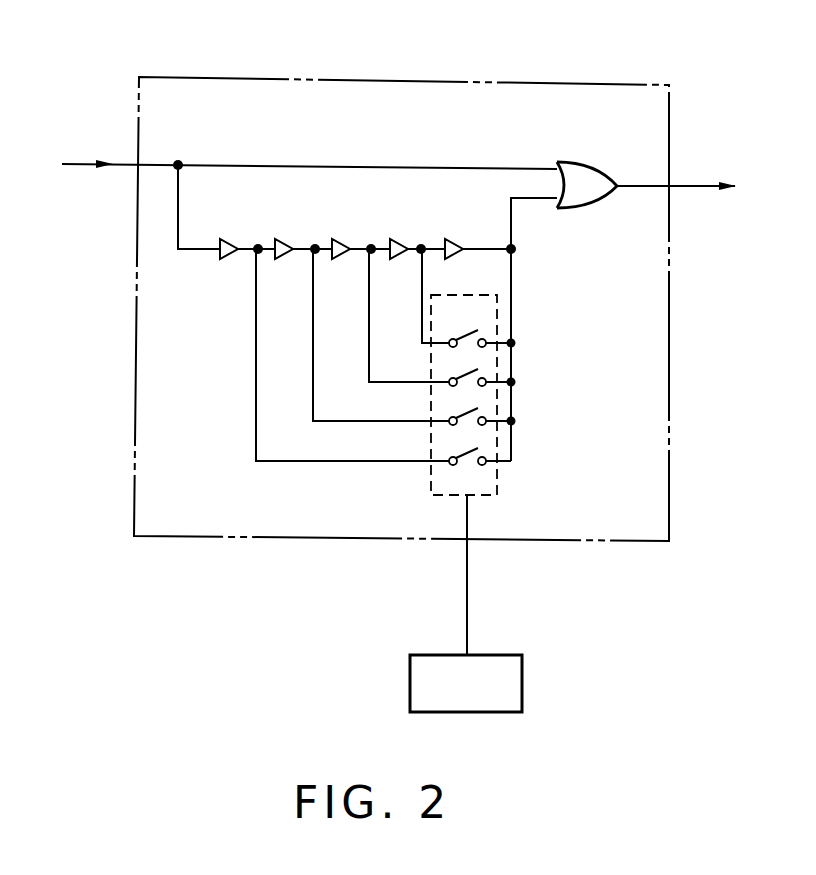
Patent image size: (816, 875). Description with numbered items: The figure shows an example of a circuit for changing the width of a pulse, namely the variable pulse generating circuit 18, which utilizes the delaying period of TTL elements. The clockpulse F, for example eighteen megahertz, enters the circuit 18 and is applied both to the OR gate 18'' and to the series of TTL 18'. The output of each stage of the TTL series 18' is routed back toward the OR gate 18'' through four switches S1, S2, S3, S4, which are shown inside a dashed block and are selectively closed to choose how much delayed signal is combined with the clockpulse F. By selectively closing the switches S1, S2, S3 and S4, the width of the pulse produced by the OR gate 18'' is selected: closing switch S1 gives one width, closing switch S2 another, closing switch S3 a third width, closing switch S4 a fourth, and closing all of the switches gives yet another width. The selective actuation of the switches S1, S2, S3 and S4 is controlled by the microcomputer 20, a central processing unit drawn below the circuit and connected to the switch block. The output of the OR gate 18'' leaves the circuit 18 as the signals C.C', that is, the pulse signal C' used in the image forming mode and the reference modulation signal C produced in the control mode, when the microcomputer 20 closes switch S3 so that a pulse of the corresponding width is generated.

The variable pulse generating circuit 18 is at (401, 279).
The series of TTL 18' is at (368, 222).
The OR gate 18'' is at (587, 154).
The control microcomputer 20 is at (494, 655).
The switch S1 is at (383, 357).
The switch S2 is at (414, 337).
The switch S3 is at (442, 318).
The switch S4 is at (469, 298).
The clockpulse F is at (83, 162).
The pulse signal and reference modulation signal C.C' is at (676, 156).